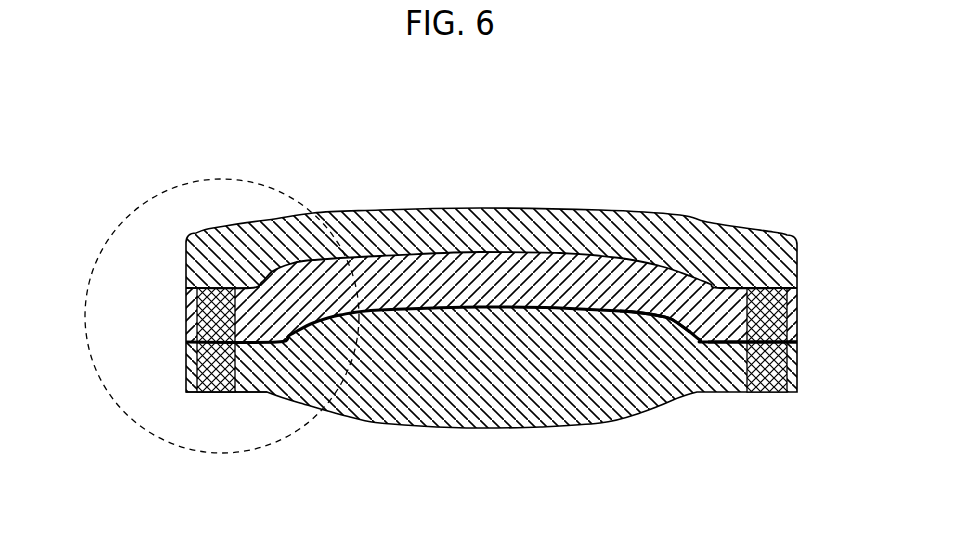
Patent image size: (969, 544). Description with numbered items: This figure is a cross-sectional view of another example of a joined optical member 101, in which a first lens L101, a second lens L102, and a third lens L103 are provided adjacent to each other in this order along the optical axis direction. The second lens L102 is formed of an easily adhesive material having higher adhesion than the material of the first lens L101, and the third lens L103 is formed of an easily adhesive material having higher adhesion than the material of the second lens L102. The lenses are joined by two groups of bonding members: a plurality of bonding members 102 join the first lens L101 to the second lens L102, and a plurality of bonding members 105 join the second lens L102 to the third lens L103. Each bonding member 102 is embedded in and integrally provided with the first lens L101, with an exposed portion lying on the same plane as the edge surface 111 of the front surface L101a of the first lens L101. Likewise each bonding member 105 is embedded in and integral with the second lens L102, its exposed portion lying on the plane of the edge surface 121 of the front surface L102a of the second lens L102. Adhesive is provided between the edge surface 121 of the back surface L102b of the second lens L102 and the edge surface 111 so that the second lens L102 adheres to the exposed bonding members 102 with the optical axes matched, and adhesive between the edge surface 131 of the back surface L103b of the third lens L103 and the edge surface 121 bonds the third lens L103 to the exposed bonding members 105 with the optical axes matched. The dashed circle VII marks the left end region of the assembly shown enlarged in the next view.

The joined optical member 101 is at (792, 88).
The bonding member 102 is at (190, 373).
The bonding member 105 is at (197, 317).
The edge surface 111 is at (720, 285).
The edge surface 121 is at (238, 287).
The edge surface 131 is at (742, 345).
The first lens L101 is at (808, 360).
The front surface L101a is at (671, 307).
The second lens L102 is at (808, 299).
The front surface L102a is at (272, 262).
The back surface L102b is at (281, 357).
The third lens L103 is at (806, 257).
The back surface L103b is at (701, 292).
The section VII enlarged region VII is at (87, 333).